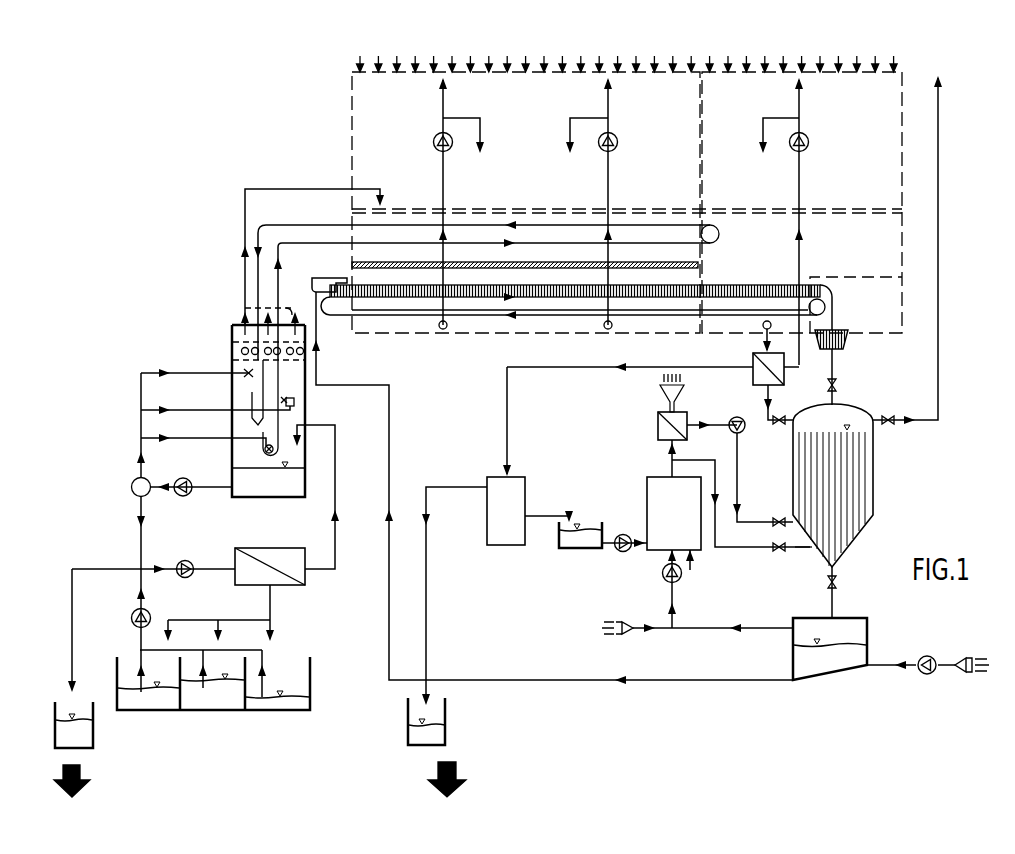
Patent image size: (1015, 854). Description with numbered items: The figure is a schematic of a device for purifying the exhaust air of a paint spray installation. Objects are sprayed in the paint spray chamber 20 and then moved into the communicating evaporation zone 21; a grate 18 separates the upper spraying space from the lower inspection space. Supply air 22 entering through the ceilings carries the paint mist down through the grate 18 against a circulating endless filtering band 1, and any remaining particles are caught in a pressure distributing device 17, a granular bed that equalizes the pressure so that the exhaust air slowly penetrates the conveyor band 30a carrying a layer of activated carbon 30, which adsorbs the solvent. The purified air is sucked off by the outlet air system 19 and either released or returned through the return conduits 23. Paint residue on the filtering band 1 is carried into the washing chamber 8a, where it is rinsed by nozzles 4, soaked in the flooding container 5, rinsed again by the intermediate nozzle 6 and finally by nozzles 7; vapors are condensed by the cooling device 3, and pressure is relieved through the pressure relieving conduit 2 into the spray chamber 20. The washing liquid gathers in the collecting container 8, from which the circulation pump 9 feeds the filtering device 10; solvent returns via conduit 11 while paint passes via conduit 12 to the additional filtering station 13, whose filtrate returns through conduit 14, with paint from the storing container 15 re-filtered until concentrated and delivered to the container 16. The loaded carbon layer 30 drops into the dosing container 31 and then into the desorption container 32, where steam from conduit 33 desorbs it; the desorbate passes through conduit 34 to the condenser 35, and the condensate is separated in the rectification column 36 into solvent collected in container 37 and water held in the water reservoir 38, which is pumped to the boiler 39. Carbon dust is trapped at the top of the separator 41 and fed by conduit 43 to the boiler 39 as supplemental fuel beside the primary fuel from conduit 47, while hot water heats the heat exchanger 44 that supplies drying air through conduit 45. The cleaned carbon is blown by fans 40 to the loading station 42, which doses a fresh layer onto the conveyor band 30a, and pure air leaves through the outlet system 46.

The filtering band 1 is at (312, 224).
The pressure relieving conduit 2 is at (245, 213).
The cooling device 3 is at (233, 348).
The nozzles 4 is at (245, 372).
The flooding container 5 is at (252, 407).
The intermediate nozzle 6 is at (263, 449).
The nozzles 7 is at (294, 399).
The collecting container 8 is at (240, 493).
The washing chamber 8a is at (230, 325).
The circulation pump 9 is at (181, 496).
The filtering device 10 is at (131, 495).
The conduit 11 is at (139, 440).
The conduit 12 is at (141, 553).
The additional filtering station 13 is at (236, 575).
The conduit 14 is at (320, 572).
The storing container 15 is at (190, 706).
The container 16 is at (85, 742).
The pressure distributing device 17 is at (625, 257).
The grate 18 is at (423, 207).
The outlet air system 19 is at (432, 141).
The paint spray chamber 20 is at (534, 109).
The evaporation zone 21 is at (770, 109).
The supply air 22 is at (410, 66).
The return conduits 23 is at (564, 136).
The adsorption material 30 is at (725, 285).
The conveyor band 30a is at (627, 302).
The dosing container 31 is at (845, 342).
The desorption container 32 is at (862, 481).
The conduit 33 is at (799, 550).
The conduit 34 is at (762, 409).
The condenser 35 is at (752, 362).
The rectification column 36 is at (494, 490).
The container 37 is at (442, 745).
The water reservoir 38 is at (581, 545).
The boiler 39 is at (659, 541).
The fans 40 is at (917, 679).
The separator 41 is at (862, 633).
The loading station 42 is at (330, 282).
The conduit 43 is at (706, 627).
The heat exchanger 44 is at (657, 412).
The conduit 45 is at (738, 493).
The outlet system 46 is at (938, 394).
The conduit 47 is at (692, 569).